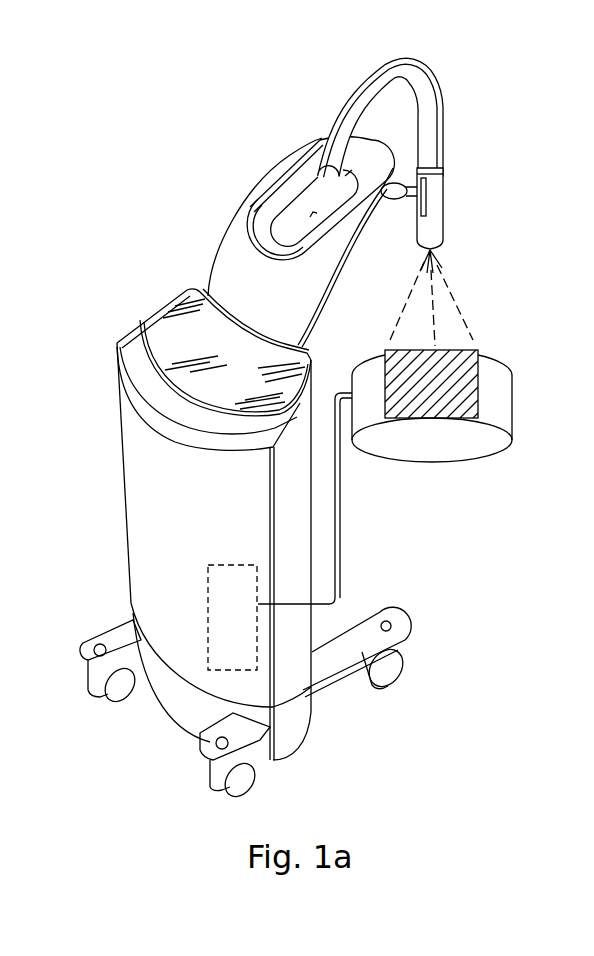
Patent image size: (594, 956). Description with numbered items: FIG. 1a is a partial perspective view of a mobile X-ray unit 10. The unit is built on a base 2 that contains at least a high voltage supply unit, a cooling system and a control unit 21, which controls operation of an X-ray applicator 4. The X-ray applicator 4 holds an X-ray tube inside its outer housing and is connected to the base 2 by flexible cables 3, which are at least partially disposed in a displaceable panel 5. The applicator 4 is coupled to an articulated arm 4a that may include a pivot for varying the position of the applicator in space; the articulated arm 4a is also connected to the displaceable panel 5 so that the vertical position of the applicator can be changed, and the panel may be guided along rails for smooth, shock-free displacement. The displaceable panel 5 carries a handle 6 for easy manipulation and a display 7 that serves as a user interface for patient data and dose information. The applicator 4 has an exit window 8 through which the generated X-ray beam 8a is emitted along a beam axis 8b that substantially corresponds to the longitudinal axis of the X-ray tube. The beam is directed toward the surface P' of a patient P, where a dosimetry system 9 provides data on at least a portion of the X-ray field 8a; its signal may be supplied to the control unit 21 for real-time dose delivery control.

The mobile X-ray unit 10 is at (250, 150).
The base 2 is at (142, 510).
The control unit 21 is at (210, 627).
The display 7 is at (173, 331).
The displaceable panel 5 is at (241, 278).
The handle 6 is at (268, 214).
The flexible cables 3 is at (446, 128).
The X-ray applicator 4 is at (445, 229).
The articulated arm 4a is at (388, 207).
The exit window 8 is at (445, 280).
The X-ray beam 8a is at (444, 304).
The beam axis 8b is at (437, 324).
The dosimetry system 9 is at (462, 378).
The patient P is at (432, 408).
The surface of the patient P' is at (538, 393).